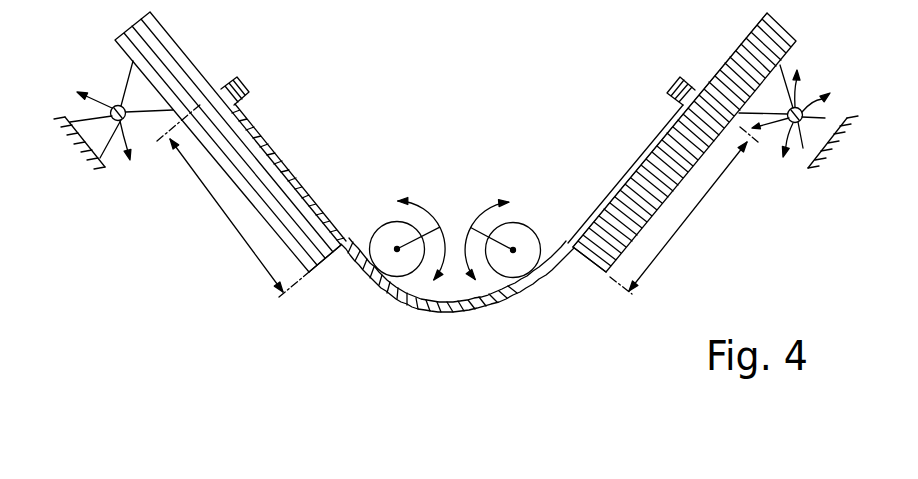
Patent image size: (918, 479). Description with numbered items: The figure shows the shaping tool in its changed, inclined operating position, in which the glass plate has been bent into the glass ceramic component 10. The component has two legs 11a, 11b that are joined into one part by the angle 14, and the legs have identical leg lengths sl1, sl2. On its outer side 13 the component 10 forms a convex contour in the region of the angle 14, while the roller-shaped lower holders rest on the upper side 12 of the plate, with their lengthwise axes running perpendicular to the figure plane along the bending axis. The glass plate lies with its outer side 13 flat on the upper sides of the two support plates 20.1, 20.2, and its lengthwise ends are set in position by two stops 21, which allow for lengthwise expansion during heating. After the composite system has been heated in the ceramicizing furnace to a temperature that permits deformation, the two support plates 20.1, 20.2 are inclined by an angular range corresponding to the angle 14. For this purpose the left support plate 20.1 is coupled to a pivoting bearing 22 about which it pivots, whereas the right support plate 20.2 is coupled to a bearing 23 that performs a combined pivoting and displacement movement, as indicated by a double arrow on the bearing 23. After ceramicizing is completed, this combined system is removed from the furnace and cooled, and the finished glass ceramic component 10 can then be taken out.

The glass ceramic component 10 is at (260, 127).
The leg 11a is at (270, 148).
The leg 11b is at (643, 157).
The upper side 12 is at (595, 205).
The outer side 13 is at (540, 283).
The angle 14 is at (458, 308).
The support plate 20.1 is at (317, 263).
The support plate 20.2 is at (592, 252).
The stop 21 is at (235, 77).
The pivoting bearing 22 is at (88, 111).
The bearing 23 is at (800, 153).
The leg length sl1 is at (233, 200).
The leg length sl2 is at (684, 210).